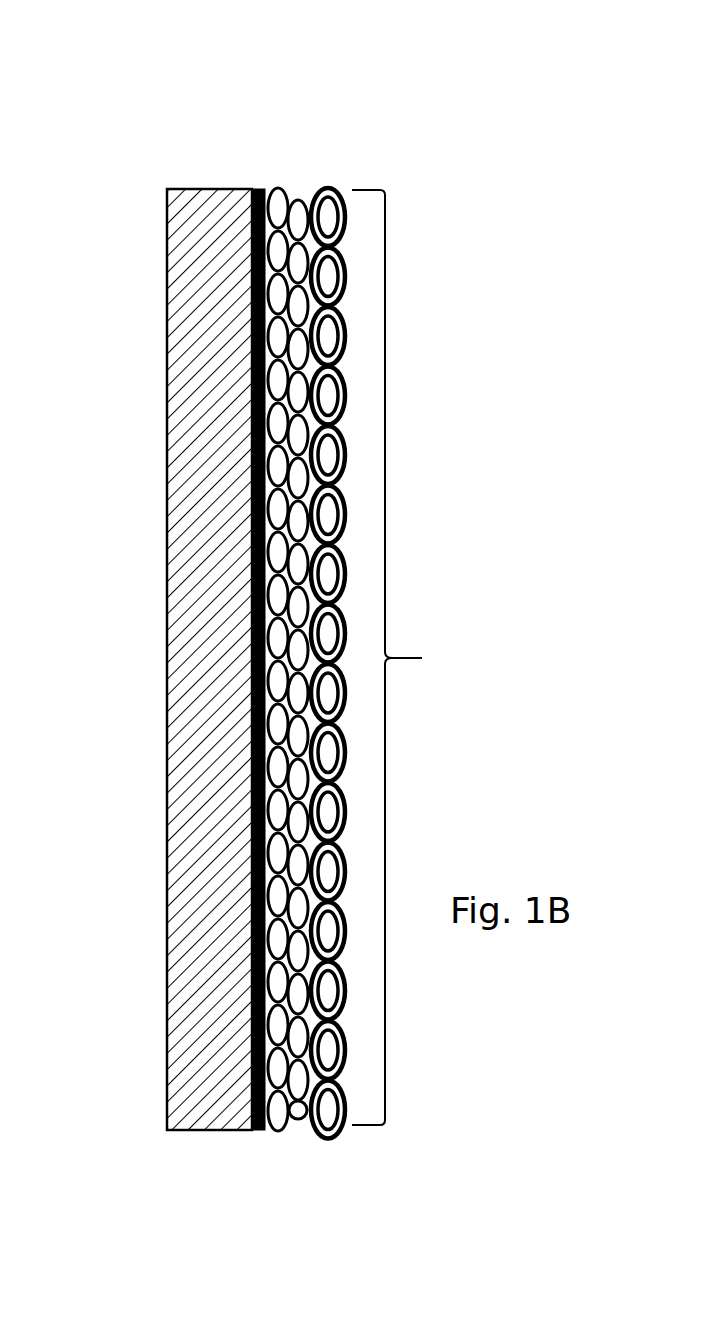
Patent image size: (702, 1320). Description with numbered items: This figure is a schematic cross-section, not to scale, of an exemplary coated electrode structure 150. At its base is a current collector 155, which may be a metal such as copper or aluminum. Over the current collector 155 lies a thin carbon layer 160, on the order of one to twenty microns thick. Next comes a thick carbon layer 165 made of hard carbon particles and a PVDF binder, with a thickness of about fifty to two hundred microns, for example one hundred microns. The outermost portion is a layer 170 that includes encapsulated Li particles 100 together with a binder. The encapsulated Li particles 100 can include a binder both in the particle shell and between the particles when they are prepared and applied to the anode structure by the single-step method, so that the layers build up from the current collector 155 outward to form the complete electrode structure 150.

The encapsulated Li particles 100 is at (346, 400).
The coated electrode structure 150 is at (261, 110).
The current collector 155 is at (193, 305).
The thin carbon layer 160 is at (263, 188).
The thick carbon layer 165 is at (310, 182).
The layer including encapsulated Li particles and a binder 170 is at (422, 657).